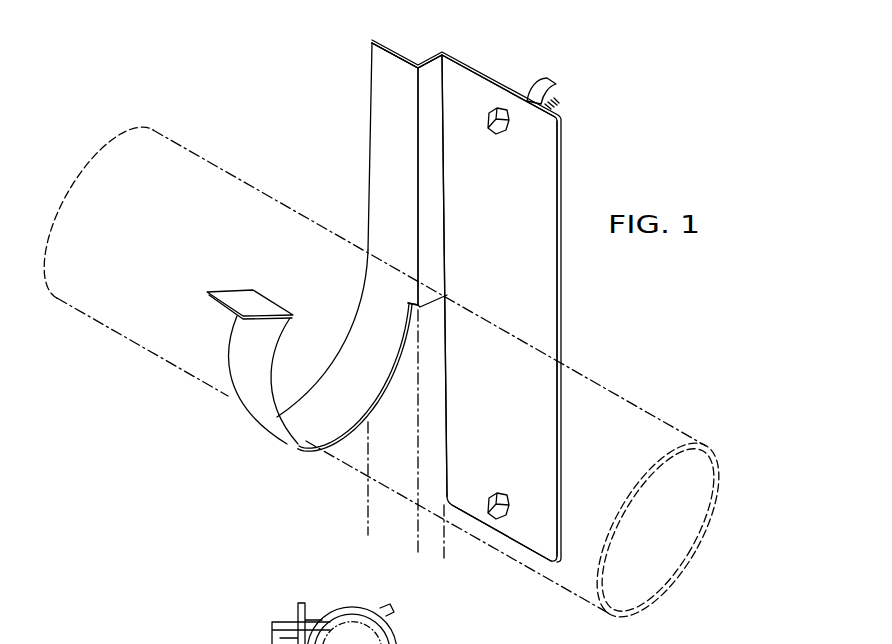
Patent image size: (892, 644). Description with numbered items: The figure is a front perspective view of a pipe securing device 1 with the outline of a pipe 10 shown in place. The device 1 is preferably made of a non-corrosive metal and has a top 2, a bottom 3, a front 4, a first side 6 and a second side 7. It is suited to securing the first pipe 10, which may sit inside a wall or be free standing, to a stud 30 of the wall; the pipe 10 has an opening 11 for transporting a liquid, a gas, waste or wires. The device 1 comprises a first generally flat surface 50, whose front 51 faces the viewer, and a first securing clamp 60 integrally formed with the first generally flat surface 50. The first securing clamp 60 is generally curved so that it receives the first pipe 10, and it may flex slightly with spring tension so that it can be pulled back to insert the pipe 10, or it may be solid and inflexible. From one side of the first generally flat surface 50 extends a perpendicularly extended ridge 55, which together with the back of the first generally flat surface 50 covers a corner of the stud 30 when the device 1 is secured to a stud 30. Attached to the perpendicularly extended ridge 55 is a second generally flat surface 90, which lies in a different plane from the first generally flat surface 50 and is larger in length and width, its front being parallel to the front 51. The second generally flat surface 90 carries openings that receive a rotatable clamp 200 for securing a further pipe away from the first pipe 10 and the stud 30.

The pipe securing device 1 is at (512, 201).
The top 2 is at (387, 42).
The bottom 3 is at (513, 540).
The front 4 is at (385, 138).
The first side 6 is at (368, 191).
The second side 7 is at (557, 331).
The pipe 10 is at (130, 318).
The opening 11 is at (668, 555).
The stud 30 is at (389, 518).
The first generally flat surface 50 is at (383, 73).
The front 51 is at (387, 87).
The perpendicularly extended ridge 55 is at (433, 104).
The first securing clamp 60 is at (300, 447).
The second generally flat surface 90 is at (530, 262).
The rotatable clamp 200 is at (527, 84).